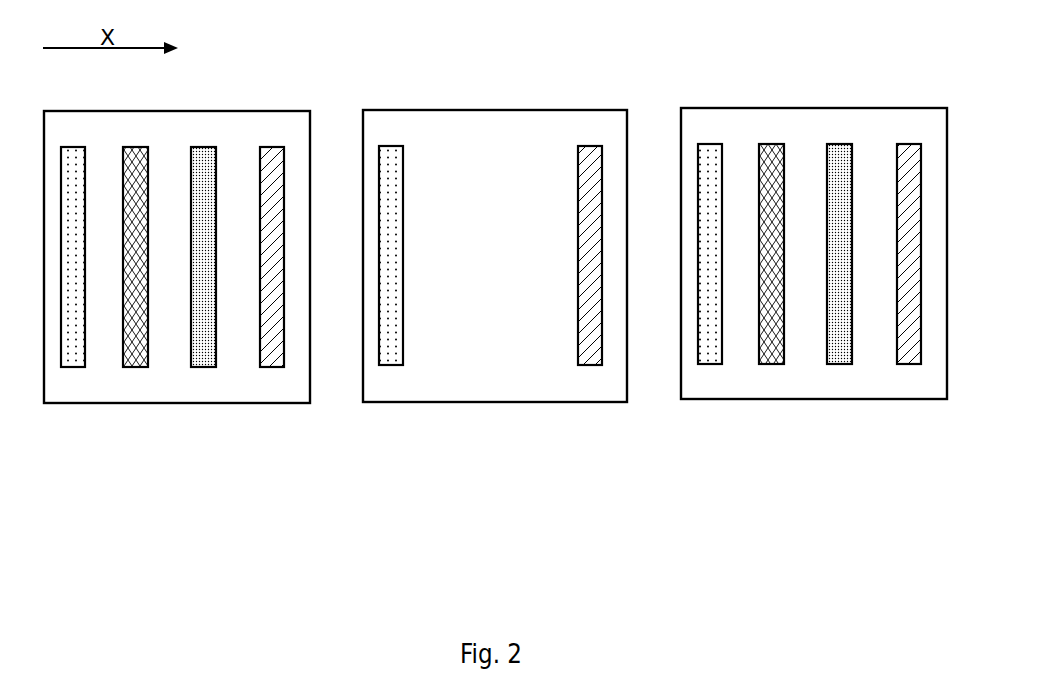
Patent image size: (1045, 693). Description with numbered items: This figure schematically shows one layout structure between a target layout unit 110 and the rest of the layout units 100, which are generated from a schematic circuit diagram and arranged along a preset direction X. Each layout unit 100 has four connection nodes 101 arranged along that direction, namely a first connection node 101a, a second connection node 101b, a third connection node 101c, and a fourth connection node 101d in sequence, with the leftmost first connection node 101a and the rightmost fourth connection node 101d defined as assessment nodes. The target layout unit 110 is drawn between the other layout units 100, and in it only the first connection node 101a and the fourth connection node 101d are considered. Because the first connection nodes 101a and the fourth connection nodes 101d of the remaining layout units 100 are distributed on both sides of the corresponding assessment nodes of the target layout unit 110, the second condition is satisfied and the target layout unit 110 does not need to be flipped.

The layout unit 100 is at (157, 111).
The target layout unit 110 is at (402, 110).
The connection node 101 is at (283, 446).
The first connection node 101a is at (68, 360).
The second connection node 101b is at (130, 360).
The third connection node 101c is at (197, 360).
The fourth connection node 101d is at (265, 360).